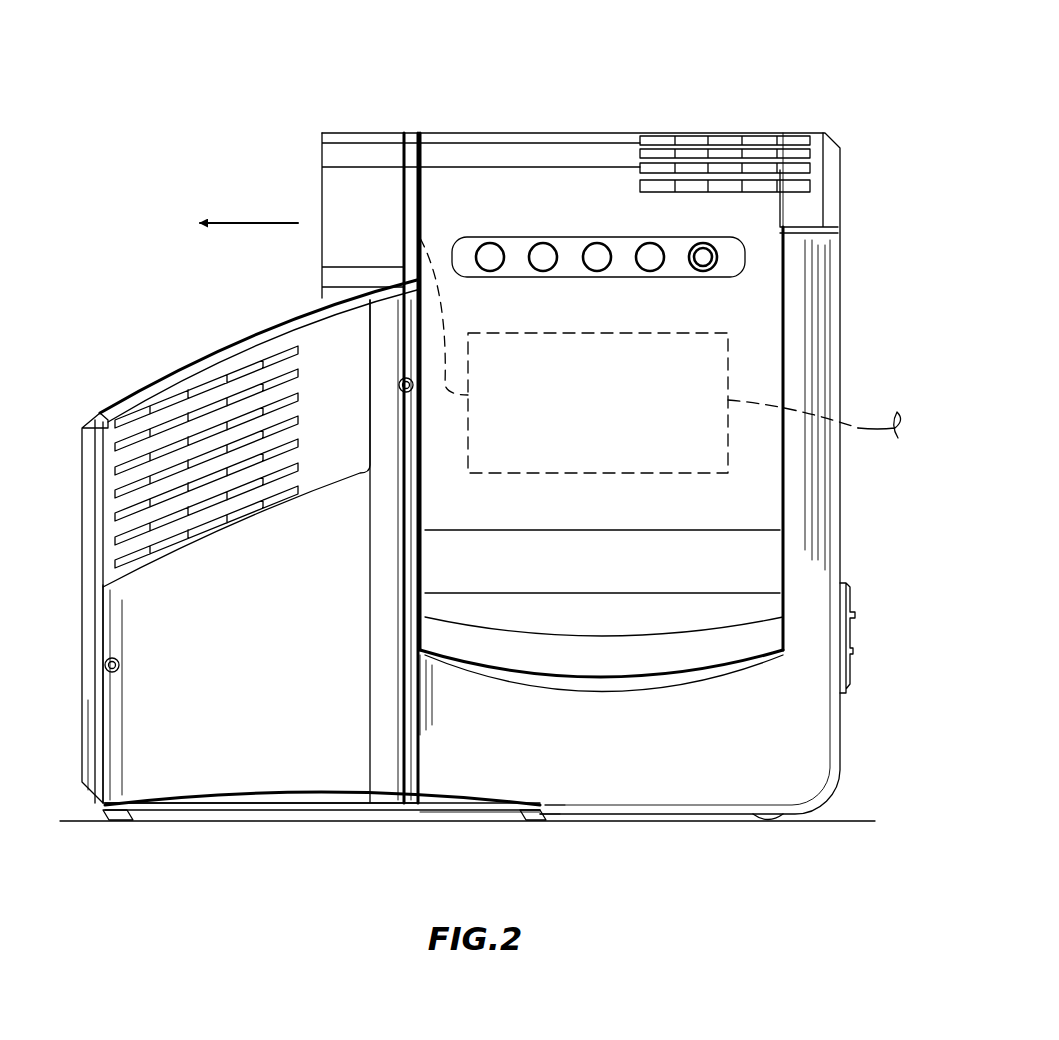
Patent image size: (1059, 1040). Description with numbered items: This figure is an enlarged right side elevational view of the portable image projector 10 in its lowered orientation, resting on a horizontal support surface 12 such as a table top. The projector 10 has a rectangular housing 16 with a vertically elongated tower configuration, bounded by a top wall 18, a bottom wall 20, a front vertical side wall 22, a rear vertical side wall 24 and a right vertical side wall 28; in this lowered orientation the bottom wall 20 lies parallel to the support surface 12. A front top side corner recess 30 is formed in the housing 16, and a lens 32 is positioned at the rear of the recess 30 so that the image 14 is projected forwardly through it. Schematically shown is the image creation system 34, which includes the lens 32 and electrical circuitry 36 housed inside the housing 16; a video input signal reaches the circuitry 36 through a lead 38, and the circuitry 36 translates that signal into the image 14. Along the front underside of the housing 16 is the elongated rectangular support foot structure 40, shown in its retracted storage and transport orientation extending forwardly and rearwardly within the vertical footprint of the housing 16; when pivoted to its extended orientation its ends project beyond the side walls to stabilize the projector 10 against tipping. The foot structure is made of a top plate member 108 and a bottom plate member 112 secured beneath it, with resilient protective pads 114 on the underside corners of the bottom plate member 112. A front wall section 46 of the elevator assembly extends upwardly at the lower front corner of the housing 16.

The portable image projector 10 is at (592, 80).
The horizontal support surface 12 is at (845, 818).
The image 14 is at (256, 223).
The housing 16 is at (493, 130).
The top wall 18 is at (612, 133).
The bottom wall 20 is at (672, 818).
The front vertical side wall 22 is at (82, 432).
The rear vertical side wall 24 is at (840, 548).
The right vertical side wall 28 is at (250, 541).
The front top side corner recess 30 is at (290, 302).
The lens 32 is at (372, 133).
The image creation system 34 is at (740, 308).
The electrical circuitry 36 is at (622, 473).
The lead 38 is at (860, 428).
The support foot structure 40 is at (287, 818).
The front wall section 46 is at (80, 706).
The top plate member 108 is at (342, 802).
The bottom plate member 112 is at (435, 815).
The resilient protective pads 114 is at (138, 825).